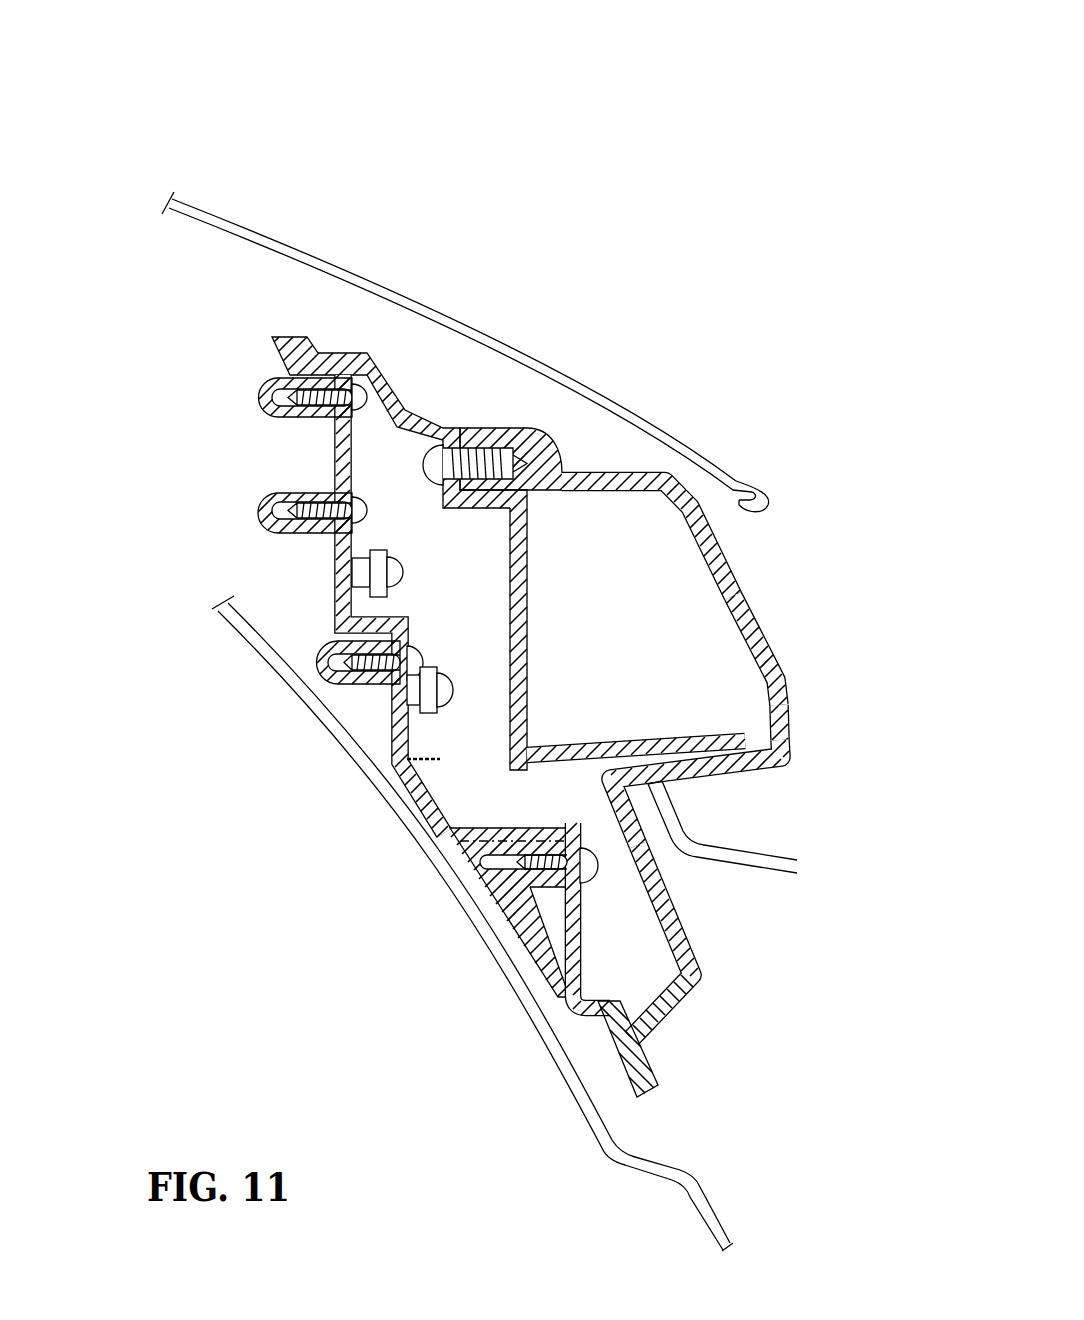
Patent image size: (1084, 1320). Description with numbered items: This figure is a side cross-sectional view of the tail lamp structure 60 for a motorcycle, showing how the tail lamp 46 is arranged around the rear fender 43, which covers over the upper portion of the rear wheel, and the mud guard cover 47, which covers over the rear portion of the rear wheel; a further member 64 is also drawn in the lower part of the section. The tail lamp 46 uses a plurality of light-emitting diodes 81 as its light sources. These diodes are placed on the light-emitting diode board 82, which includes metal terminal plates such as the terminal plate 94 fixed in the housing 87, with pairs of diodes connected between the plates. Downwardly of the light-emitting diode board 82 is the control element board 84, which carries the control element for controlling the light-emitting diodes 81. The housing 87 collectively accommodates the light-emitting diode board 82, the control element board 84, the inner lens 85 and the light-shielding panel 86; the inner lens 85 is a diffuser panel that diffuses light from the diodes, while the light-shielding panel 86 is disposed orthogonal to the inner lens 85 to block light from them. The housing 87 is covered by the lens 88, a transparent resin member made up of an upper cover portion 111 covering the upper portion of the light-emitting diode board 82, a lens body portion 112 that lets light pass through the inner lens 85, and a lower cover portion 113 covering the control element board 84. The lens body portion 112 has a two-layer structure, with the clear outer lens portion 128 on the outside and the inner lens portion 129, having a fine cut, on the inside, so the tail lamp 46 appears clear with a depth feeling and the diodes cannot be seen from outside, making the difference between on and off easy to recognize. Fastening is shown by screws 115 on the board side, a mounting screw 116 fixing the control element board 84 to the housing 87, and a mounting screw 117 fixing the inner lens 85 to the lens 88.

The tail lamp structure 60 is at (175, 74).
The rear fender 43 is at (300, 228).
The tail lamp 46 is at (612, 431).
The mud guard cover 47 is at (782, 834).
The pillar 64 is at (706, 1193).
The light-emitting diodes 81 is at (405, 575).
The light-emitting diode board 82 is at (508, 520).
The control element board 84 is at (583, 940).
The inner lens 85 is at (527, 703).
The light-shielding panel 86 is at (787, 683).
The housing 87 is at (423, 859).
The lens 88 is at (748, 755).
The terminal plate 94 is at (345, 628).
The upper cover portion 111 is at (403, 400).
The lens body portion 112 is at (773, 648).
The lower cover portion 113 is at (646, 840).
The screw 115 is at (380, 367).
The mounting screw 116 is at (597, 867).
The mounting screw 117 is at (425, 465).
The outer lens portion 128 is at (780, 667).
The inner lens portion 129 is at (747, 588).